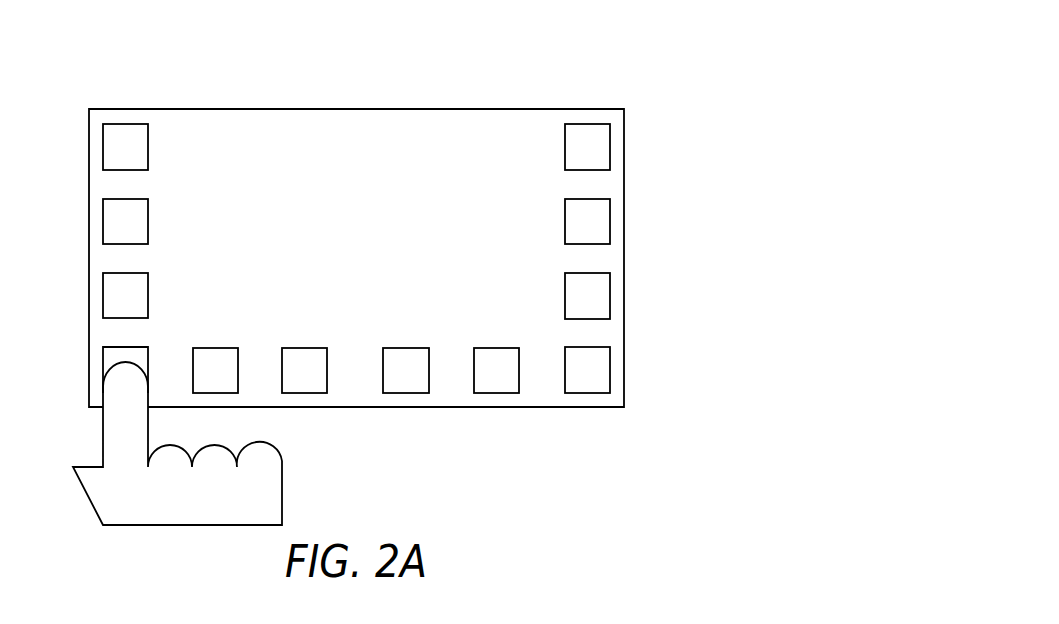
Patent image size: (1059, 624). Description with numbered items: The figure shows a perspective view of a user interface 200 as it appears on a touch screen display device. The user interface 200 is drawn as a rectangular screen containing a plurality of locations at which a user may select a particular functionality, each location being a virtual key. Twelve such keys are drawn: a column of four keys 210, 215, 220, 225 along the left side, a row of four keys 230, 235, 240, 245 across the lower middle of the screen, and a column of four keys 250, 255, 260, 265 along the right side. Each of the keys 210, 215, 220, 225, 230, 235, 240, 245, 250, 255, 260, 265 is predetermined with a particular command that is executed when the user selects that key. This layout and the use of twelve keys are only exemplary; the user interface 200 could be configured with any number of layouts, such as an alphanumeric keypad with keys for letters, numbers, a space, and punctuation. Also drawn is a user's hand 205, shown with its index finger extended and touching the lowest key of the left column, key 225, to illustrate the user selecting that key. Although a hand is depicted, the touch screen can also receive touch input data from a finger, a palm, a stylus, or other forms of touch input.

The user interface 200 is at (718, 56).
The user's hand 205 is at (95, 510).
The key 210 is at (103, 147).
The key 215 is at (103, 222).
The key 220 is at (103, 295).
The key 225 is at (105, 362).
The key 230 is at (207, 348).
The key 235 is at (297, 348).
The key 240 is at (396, 348).
The key 245 is at (487, 348).
The key 250 is at (608, 362).
The key 255 is at (610, 295).
The key 260 is at (610, 222).
The key 265 is at (610, 147).